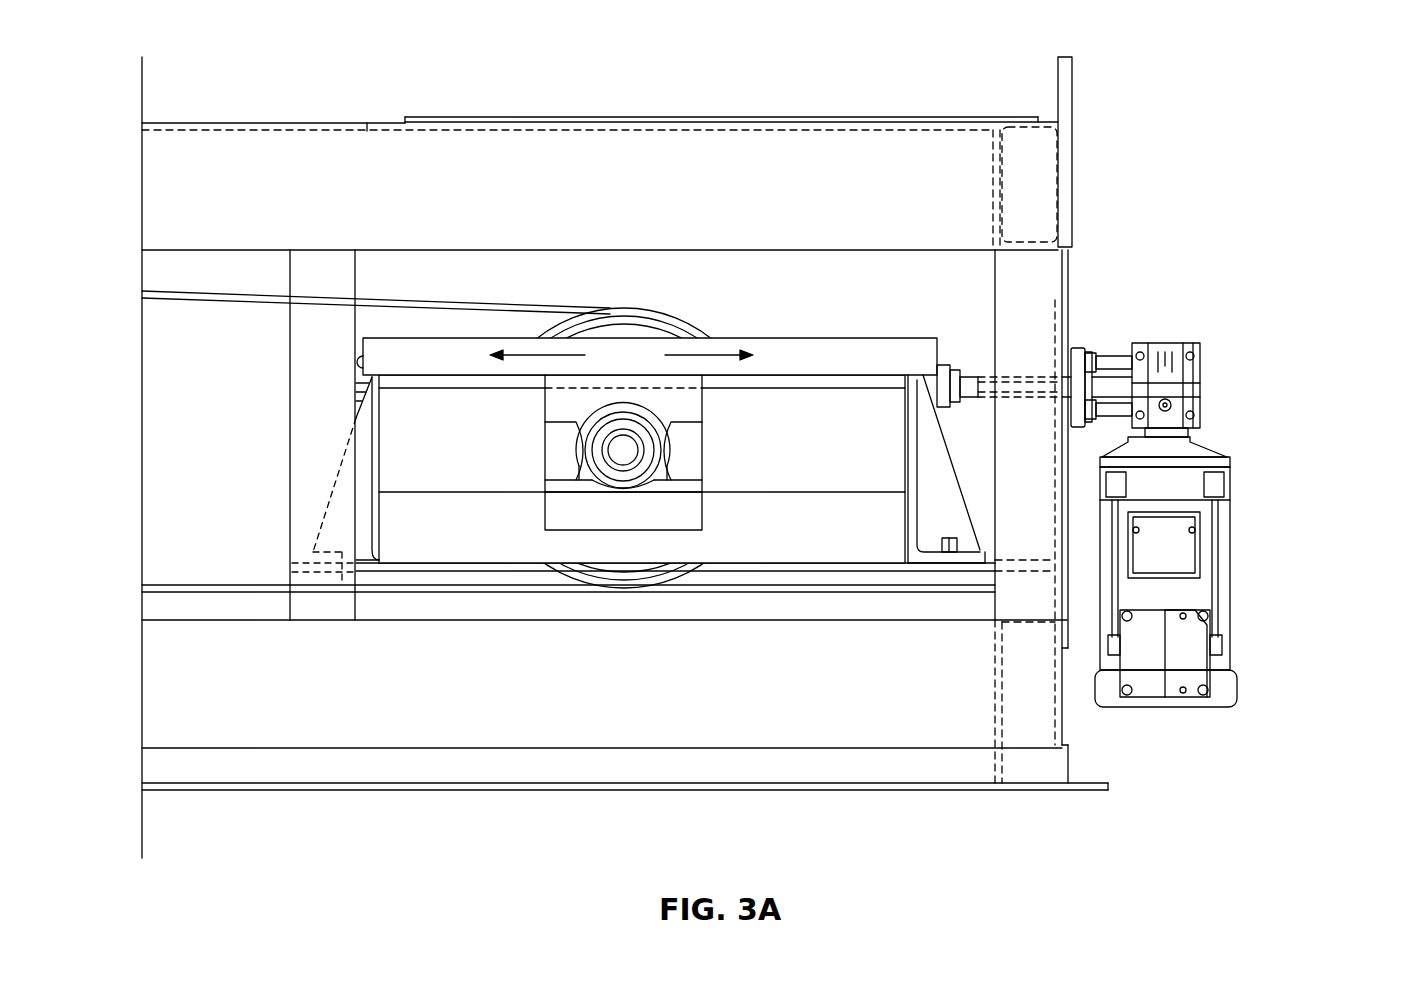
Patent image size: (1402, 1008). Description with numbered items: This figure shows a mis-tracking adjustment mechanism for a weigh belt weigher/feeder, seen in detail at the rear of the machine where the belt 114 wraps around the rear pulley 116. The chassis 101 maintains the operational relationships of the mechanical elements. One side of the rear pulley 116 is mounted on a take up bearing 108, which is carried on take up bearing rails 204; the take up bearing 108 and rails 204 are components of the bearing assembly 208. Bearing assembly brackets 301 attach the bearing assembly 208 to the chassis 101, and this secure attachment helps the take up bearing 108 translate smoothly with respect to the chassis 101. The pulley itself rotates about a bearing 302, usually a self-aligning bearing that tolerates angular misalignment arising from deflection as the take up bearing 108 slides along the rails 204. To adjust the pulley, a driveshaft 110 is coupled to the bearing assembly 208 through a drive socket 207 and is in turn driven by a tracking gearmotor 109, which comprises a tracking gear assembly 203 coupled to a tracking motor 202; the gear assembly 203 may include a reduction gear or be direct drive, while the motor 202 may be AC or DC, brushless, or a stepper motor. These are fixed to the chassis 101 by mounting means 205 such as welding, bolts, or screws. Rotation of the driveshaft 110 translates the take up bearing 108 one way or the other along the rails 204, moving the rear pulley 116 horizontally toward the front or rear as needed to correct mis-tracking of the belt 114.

The chassis 101 is at (1070, 280).
The take up bearing 108 is at (574, 505).
The tracking gearmotor 109 is at (1308, 313).
The driveshaft 110 is at (1022, 370).
The belt 114 is at (153, 290).
The rear pulley 116 is at (581, 318).
The tracking motor 202 is at (1222, 567).
The tracking gear assembly 203 is at (1193, 350).
The take up bearing rails 204 is at (841, 362).
The mounting means 205 is at (1073, 345).
The drive socket 207 is at (975, 365).
The bearing assembly 208 is at (740, 338).
The bearing assembly brackets 301 is at (342, 585).
The bearing 302 is at (636, 490).